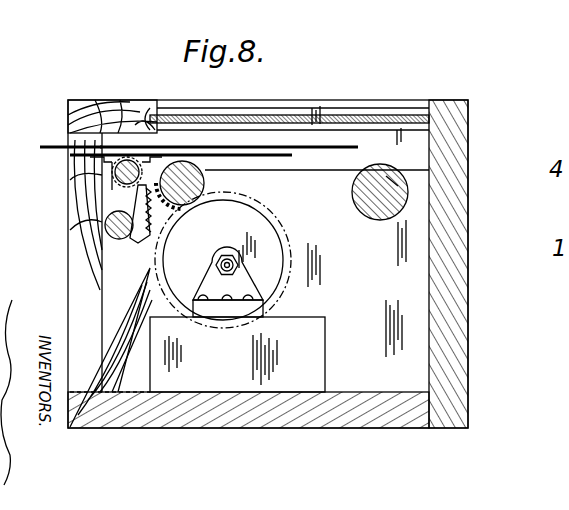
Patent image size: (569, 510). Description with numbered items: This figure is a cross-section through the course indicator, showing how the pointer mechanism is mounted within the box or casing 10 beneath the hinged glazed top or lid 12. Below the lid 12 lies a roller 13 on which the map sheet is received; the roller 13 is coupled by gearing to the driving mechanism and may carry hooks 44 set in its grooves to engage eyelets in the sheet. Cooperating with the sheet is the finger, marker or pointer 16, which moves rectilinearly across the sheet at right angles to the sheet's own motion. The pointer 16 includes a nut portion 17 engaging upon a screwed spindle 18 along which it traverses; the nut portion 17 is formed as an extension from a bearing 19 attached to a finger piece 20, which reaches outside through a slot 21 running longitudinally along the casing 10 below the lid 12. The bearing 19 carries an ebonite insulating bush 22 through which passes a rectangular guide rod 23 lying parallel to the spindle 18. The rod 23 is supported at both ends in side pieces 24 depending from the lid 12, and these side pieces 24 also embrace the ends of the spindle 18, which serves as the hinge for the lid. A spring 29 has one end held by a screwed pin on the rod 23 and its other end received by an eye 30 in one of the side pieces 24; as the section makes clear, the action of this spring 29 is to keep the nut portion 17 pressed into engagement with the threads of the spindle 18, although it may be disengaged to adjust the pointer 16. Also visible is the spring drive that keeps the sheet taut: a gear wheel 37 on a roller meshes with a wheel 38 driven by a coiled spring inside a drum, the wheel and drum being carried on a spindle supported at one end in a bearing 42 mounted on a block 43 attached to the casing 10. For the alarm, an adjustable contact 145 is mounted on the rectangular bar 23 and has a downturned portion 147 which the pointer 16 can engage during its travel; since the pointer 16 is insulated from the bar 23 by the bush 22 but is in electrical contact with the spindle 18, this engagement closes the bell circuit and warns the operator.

The box or casing 10 is at (455, 233).
The hinged glazed top or lid 12 is at (333, 112).
The roller 13 is at (380, 212).
The finger, marker or pointer 16 is at (268, 158).
The nut portion 17 is at (102, 235).
The screwed spindle 18 is at (104, 223).
The bearing 19 is at (108, 178).
The finger piece 20 is at (70, 155).
The slot 21 is at (84, 141).
The insulating bush 22 is at (126, 160).
The rectangular guide rod 23 is at (145, 157).
The side pieces 24 is at (82, 245).
The spring 29 is at (163, 225).
The eye 30 is at (128, 257).
The gear wheel 37 is at (204, 192).
The wheel 38 is at (212, 200).
The bearing 42 is at (227, 256).
The block 43 is at (290, 327).
The hooks 44 is at (400, 165).
The adjustable contact 145 is at (358, 148).
The downturned portion 147 is at (277, 138).